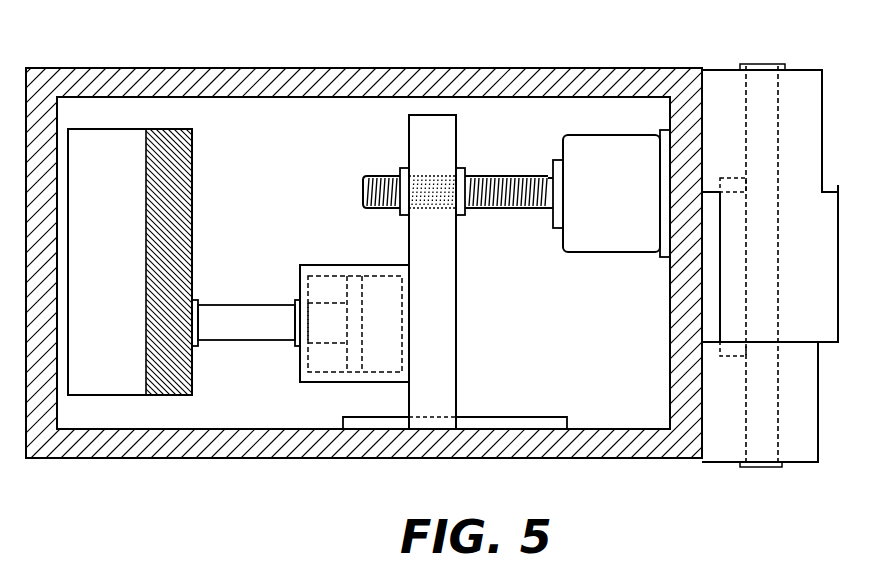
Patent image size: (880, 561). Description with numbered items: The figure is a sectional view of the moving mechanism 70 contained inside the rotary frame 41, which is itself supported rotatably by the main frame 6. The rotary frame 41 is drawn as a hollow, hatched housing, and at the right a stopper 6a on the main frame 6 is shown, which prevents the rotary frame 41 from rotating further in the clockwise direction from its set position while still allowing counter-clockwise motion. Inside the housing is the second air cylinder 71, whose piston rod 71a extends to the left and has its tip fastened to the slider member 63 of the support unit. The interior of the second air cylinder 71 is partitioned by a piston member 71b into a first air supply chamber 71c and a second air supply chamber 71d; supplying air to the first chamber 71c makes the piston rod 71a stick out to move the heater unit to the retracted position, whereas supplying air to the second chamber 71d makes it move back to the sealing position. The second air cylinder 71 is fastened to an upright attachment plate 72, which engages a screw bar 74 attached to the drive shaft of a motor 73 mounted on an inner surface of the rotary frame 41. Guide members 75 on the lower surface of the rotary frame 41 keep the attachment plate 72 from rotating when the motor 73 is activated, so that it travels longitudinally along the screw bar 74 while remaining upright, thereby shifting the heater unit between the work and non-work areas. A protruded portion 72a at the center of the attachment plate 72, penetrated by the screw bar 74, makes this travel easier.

The moving mechanism 70 is at (518, 117).
The rotary frame 41 is at (322, 438).
The slider member 63 is at (177, 177).
The second air cylinder 71 is at (340, 315).
The piston rod 71a is at (238, 315).
The piston member 71b is at (352, 360).
The first air supply chamber 71c is at (378, 285).
The second air supply chamber 71d is at (320, 362).
The attachment plate 72 is at (430, 292).
The protruded portion 72a is at (403, 172).
The motor 73 is at (615, 242).
The screw bar 74 is at (477, 187).
The guide members 75 is at (528, 418).
The main frame 6 is at (810, 318).
The stopper 6a is at (735, 180).